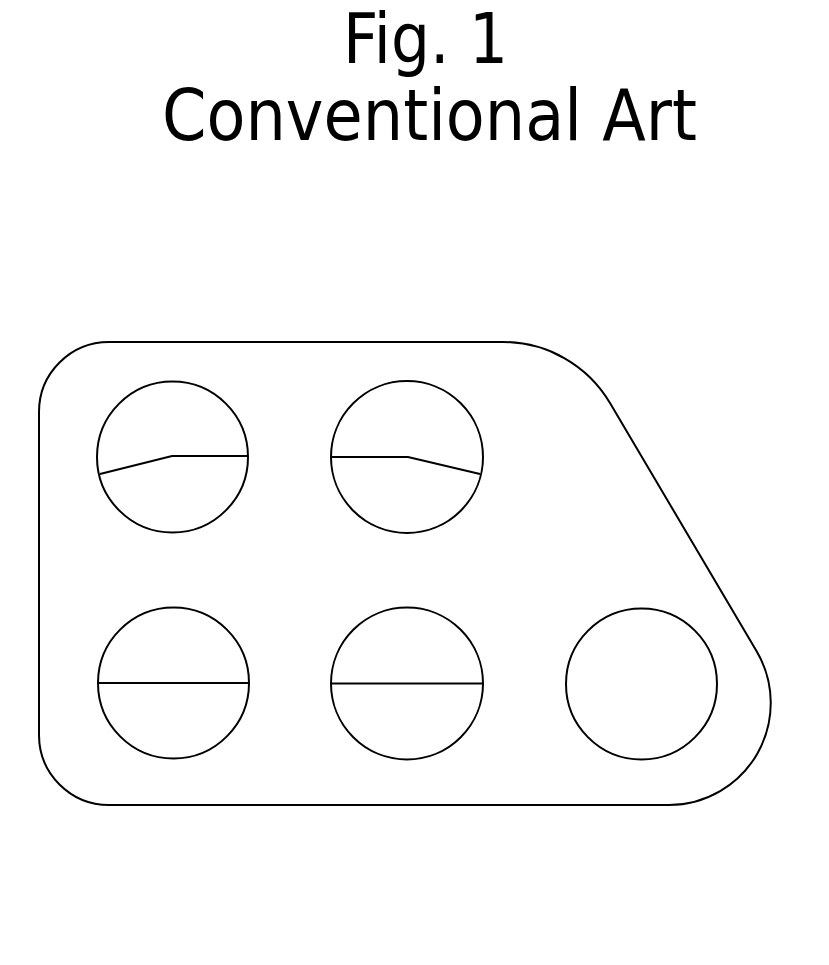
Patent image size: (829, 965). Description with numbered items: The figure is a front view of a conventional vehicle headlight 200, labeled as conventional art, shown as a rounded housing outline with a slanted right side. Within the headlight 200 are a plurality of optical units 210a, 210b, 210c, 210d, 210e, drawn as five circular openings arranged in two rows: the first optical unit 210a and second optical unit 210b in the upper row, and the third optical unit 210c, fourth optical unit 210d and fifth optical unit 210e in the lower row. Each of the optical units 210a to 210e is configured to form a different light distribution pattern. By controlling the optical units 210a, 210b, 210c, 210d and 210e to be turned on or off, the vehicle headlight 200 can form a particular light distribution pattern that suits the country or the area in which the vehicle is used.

The vehicle headlight 200 is at (303, 278).
The optical unit 210a is at (172, 392).
The optical unit 210b is at (407, 392).
The optical unit 210c is at (210, 633).
The optical unit 210d is at (447, 633).
The optical unit 210e is at (627, 633).